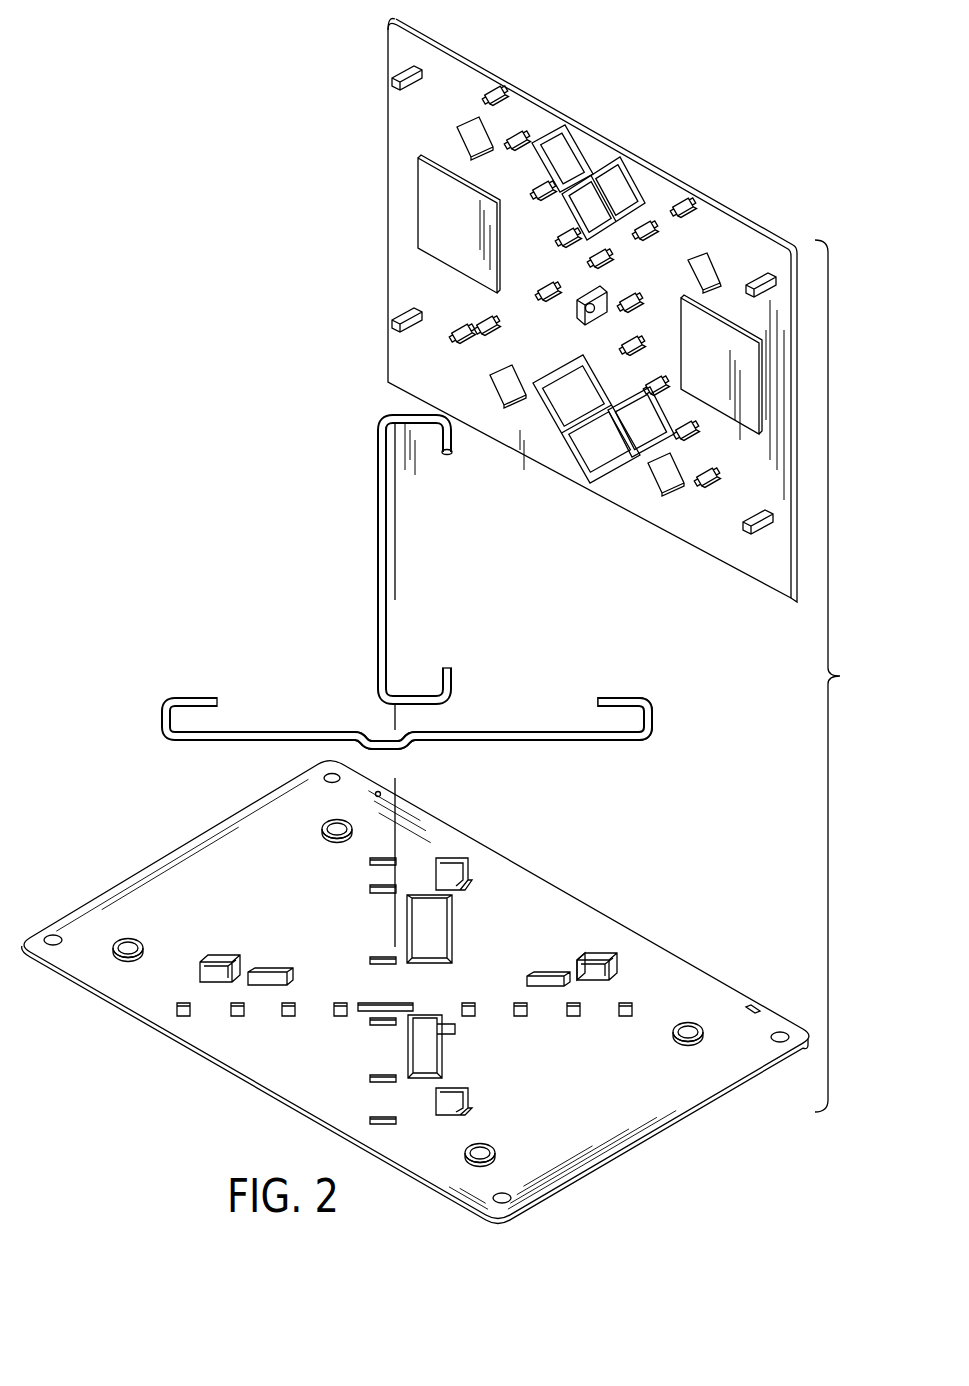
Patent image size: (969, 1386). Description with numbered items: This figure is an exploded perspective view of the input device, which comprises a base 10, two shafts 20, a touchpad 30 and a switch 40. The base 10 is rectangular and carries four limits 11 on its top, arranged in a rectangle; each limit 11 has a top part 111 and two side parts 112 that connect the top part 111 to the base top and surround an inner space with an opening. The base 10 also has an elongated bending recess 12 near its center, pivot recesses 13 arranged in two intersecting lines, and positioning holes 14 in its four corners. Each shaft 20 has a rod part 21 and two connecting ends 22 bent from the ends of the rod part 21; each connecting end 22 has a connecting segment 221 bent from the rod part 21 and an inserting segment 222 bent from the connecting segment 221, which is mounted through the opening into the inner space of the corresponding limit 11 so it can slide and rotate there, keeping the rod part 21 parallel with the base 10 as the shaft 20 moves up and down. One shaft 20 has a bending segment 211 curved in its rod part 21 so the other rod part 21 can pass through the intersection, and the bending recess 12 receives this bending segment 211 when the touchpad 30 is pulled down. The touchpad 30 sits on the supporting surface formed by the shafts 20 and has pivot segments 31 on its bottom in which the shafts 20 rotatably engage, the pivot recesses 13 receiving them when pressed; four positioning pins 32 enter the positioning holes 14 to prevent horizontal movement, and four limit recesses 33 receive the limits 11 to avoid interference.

The base 10 is at (418, 992).
The limit 11 is at (197, 960).
The top part 111 is at (606, 962).
The side part 112 is at (581, 965).
The bending recess 12 is at (360, 1015).
The pivot recess 13 is at (240, 1018).
The positioning hole 14 is at (126, 958).
The shaft 20 is at (148, 716).
The rod part 21 is at (301, 741).
The bending segment 211 is at (375, 740).
The connecting end 22 is at (668, 736).
The connecting segment 221 is at (652, 713).
The inserting segment 222 is at (619, 698).
The touchpad 30 is at (731, 178).
The pivot segment 31 is at (503, 93).
The positioning pin 32 is at (766, 287).
The limit recess 33 is at (713, 262).
The switch 40 is at (578, 300).